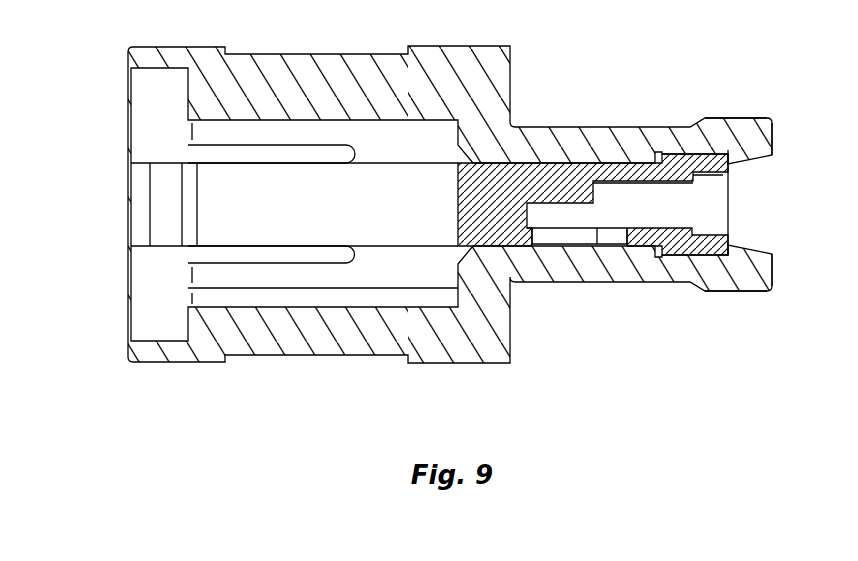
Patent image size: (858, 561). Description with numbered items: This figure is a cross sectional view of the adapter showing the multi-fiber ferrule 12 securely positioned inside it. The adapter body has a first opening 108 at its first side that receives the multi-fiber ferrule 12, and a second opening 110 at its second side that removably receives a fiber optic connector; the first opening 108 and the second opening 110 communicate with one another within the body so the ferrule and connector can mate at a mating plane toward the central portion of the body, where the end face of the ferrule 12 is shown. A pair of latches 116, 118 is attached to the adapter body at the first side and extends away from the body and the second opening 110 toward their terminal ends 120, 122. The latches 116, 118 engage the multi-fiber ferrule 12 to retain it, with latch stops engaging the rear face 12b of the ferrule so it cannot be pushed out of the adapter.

The multi-fiber ferrule 12 is at (683, 244).
The rear face of the multi-fiber ferrule 12b is at (735, 172).
The first opening 108 is at (553, 248).
The second opening 110 is at (260, 218).
The latch 116 is at (738, 117).
The latch 118 is at (727, 296).
The terminal end of latch 120 is at (773, 124).
The terminal end of latch 122 is at (773, 283).